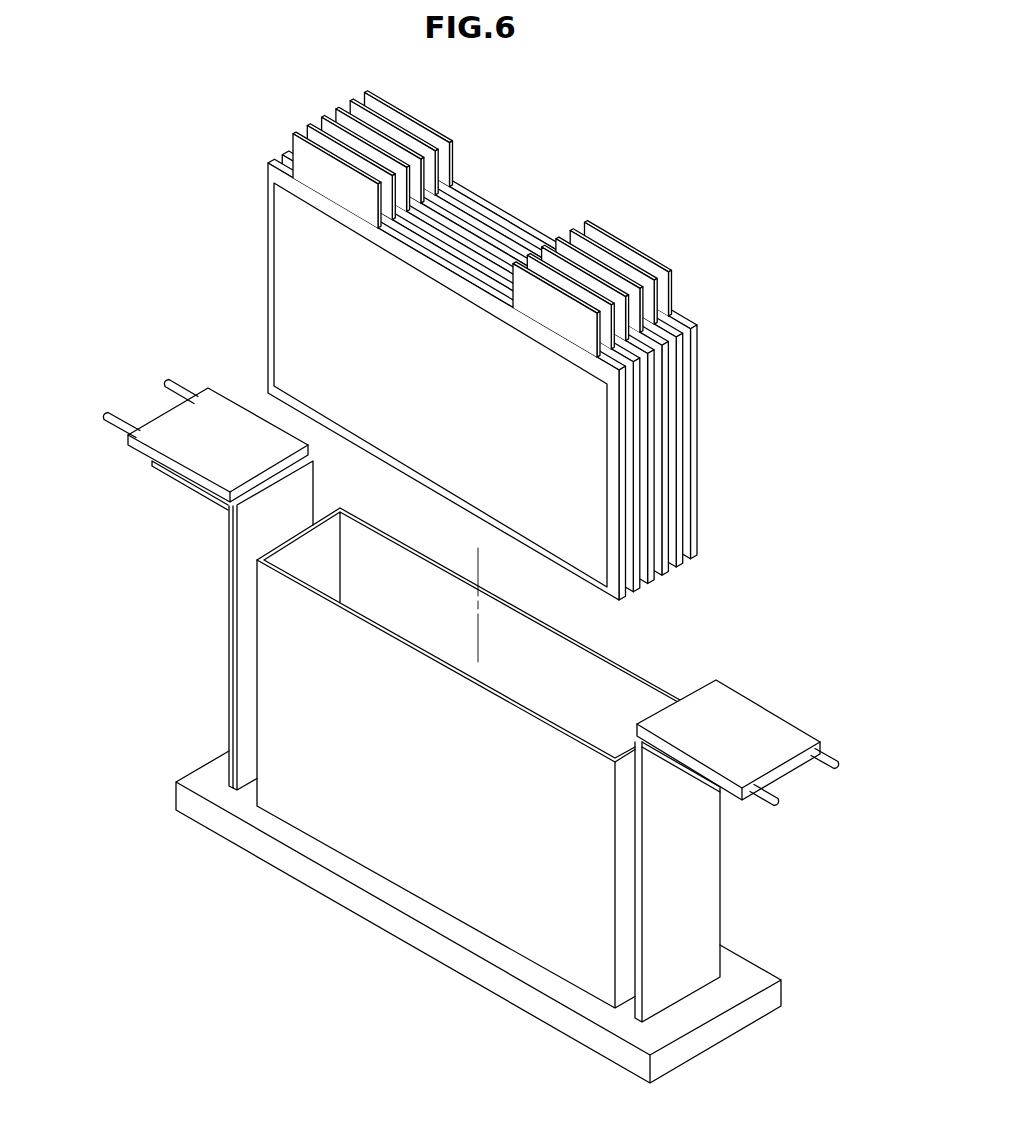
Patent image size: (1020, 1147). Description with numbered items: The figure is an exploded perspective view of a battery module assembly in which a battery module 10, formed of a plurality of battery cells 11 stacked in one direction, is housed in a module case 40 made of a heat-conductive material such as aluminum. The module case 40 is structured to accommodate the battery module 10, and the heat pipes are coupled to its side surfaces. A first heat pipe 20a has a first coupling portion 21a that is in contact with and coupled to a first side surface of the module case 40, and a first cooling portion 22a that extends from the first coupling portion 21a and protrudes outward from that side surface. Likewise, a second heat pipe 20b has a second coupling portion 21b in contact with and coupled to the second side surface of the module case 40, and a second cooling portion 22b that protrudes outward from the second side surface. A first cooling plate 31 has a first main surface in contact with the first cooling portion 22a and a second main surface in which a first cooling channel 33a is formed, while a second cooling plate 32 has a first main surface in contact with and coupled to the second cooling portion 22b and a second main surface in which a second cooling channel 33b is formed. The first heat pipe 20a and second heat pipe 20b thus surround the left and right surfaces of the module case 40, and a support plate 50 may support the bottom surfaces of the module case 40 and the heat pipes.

The battery module 10 is at (528, 200).
The battery cells 11 is at (487, 210).
The first heat pipe 20a is at (193, 625).
The first coupling portion 21a is at (227, 600).
The first cooling portion 22a is at (162, 465).
The second heat pipe 20b is at (749, 882).
The second coupling portion 21b is at (700, 898).
The second cooling portion 22b is at (688, 775).
The first cooling plate 31 is at (143, 396).
The second cooling plate 32 is at (783, 703).
The first cooling channel 33a is at (178, 380).
The second cooling channel 33b is at (830, 757).
The module case 40 is at (485, 905).
The support plate 50 is at (562, 1015).